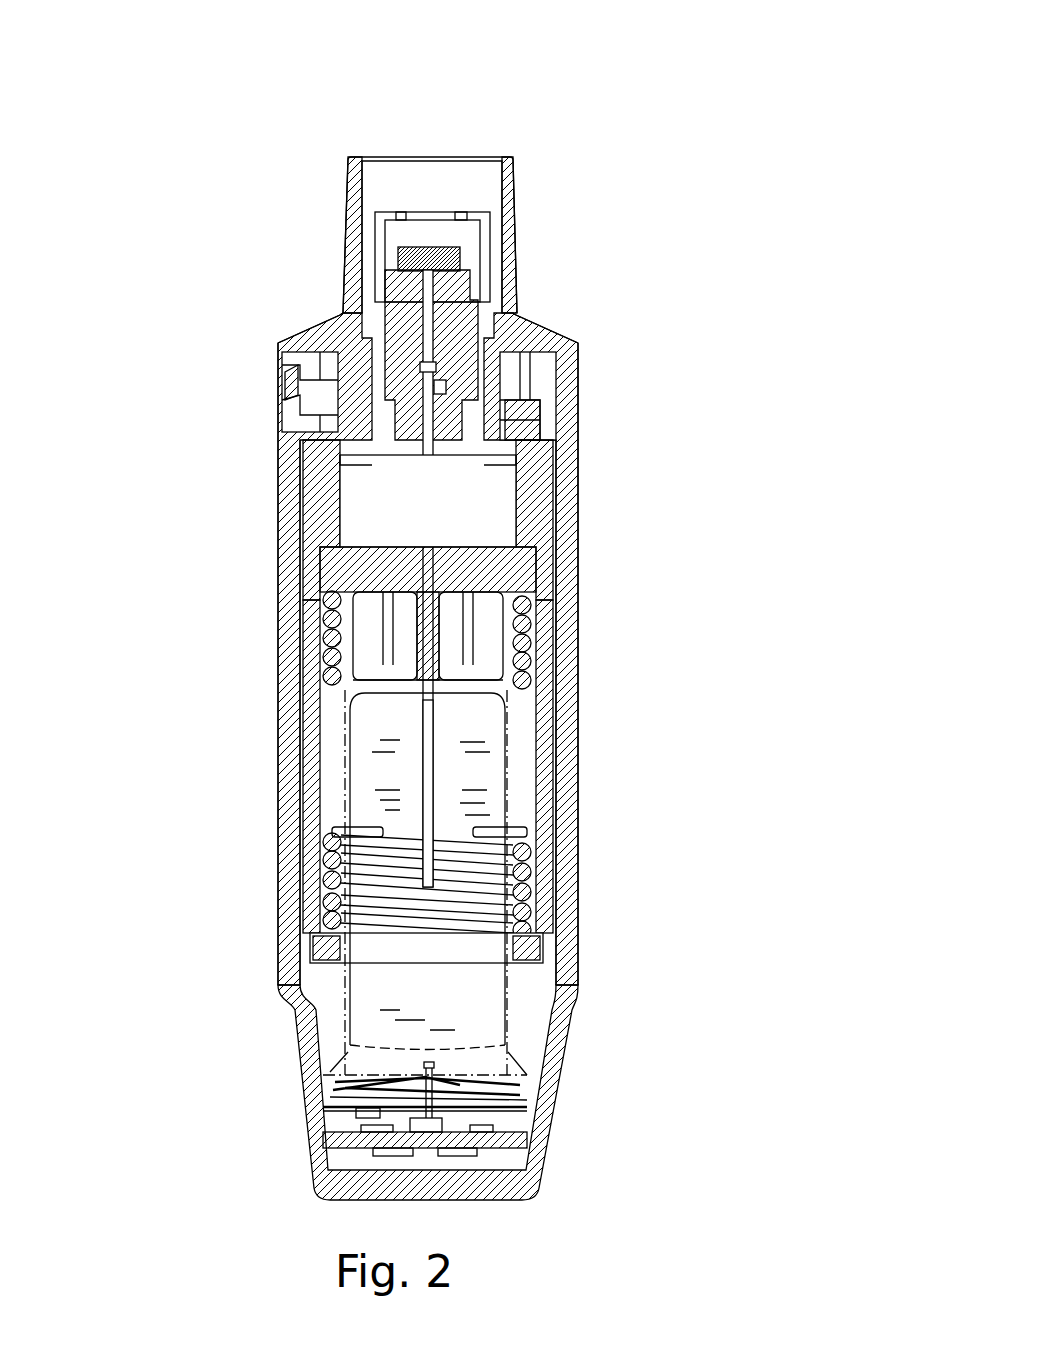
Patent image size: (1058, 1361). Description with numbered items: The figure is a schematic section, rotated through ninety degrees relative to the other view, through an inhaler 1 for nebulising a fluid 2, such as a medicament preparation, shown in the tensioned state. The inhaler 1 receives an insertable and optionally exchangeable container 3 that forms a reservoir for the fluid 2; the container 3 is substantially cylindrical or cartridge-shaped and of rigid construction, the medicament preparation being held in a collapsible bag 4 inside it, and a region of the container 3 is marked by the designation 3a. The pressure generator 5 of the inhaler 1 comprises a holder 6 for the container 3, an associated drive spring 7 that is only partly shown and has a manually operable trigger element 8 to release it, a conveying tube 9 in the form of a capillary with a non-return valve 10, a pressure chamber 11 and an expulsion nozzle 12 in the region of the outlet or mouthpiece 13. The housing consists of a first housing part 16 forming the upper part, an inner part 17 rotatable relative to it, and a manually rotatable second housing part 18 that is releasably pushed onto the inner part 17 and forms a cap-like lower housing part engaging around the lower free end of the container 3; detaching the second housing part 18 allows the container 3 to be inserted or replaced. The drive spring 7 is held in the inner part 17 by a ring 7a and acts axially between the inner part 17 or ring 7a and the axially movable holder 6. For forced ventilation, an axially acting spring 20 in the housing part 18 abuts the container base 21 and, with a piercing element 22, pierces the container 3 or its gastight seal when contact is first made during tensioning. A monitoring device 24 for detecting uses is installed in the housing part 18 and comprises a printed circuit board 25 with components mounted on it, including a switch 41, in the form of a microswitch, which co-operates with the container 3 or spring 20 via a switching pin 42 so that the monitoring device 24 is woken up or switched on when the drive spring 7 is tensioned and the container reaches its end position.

The inhaler 1 is at (611, 171).
The fluid 2 is at (473, 743).
The container 3 is at (530, 787).
The cartridge holder 3a is at (508, 753).
The collapsible bag 4 is at (543, 837).
The pressure generator 5 is at (462, 388).
The holder 6 is at (490, 597).
The drive spring 7 is at (535, 605).
The ring 7a is at (533, 947).
The trigger element 8 is at (255, 398).
The conveying tube 9 is at (437, 487).
The non-return valve 10 is at (437, 370).
The pressure chamber 11 is at (430, 295).
The expulsion nozzle 12 is at (450, 234).
The mouthpiece 13 is at (348, 242).
The first housing part 16 is at (298, 492).
The inner part 17 is at (320, 705).
The second housing part 18 is at (285, 855).
The spring 20 is at (420, 1110).
The container base 21 is at (545, 1088).
The piercing element 22 is at (420, 1057).
The monitoring device 24 is at (395, 648).
The printed circuit board 25 is at (527, 1145).
The switch 41 is at (428, 1135).
The switching pin 42 is at (418, 1118).